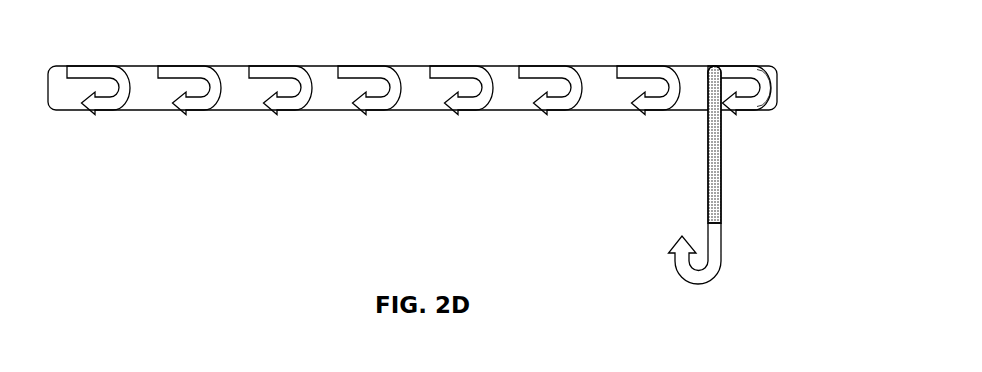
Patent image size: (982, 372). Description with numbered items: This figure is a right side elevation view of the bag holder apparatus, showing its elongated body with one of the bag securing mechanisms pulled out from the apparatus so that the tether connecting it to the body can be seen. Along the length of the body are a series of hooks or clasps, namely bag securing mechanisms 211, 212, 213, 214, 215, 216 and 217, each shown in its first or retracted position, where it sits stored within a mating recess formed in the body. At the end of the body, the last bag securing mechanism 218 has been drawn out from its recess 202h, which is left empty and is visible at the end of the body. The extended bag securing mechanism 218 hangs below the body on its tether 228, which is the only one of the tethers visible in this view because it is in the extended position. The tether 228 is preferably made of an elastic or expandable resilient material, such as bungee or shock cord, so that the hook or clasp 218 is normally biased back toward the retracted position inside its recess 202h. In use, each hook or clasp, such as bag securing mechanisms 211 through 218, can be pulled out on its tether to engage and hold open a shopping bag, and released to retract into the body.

The bag securing mechanism 211 is at (107, 106).
The bag securing mechanism 212 is at (198, 106).
The bag securing mechanism 213 is at (289, 106).
The bag securing mechanism 214 is at (378, 106).
The bag securing mechanism 215 is at (470, 106).
The bag securing mechanism 216 is at (559, 106).
The bag securing mechanism 217 is at (657, 106).
The mating recess 202h is at (742, 71).
The tether 228 is at (718, 163).
The bag securing mechanism 218 is at (718, 258).